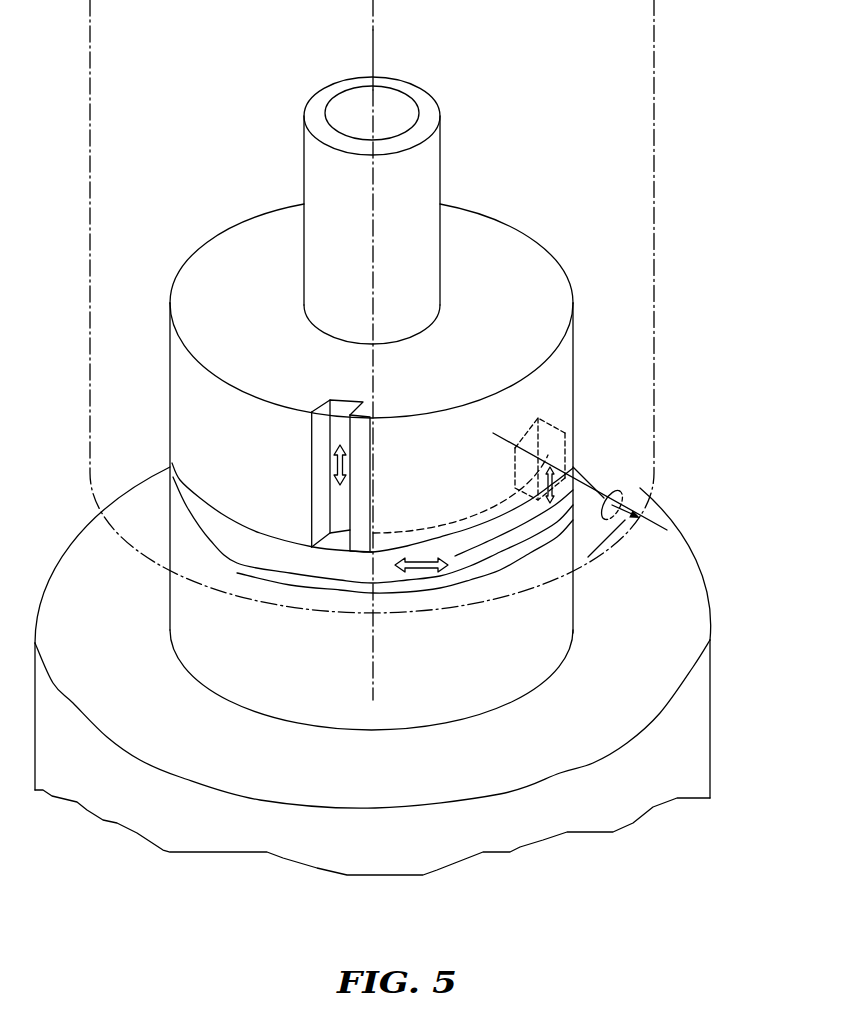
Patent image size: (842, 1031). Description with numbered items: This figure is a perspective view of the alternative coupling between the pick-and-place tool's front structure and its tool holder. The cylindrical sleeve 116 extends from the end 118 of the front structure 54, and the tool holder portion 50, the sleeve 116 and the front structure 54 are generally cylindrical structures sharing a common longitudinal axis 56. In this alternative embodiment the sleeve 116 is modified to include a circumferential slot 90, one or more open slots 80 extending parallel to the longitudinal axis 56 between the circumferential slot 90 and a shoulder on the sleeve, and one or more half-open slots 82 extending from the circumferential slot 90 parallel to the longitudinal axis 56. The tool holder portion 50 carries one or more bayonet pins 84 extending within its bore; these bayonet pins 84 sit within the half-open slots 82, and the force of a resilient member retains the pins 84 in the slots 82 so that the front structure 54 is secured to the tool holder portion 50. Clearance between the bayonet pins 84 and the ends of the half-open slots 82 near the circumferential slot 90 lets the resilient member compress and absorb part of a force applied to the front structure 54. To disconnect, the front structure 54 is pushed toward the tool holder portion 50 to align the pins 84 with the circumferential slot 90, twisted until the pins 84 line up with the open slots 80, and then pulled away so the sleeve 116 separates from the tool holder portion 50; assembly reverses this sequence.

The tool holder portion 50 is at (657, 32).
The front structure 54 is at (683, 660).
The longitudinal axis 56 is at (373, 40).
The open slot 80 is at (337, 400).
The half-open slot 82 is at (563, 443).
The bayonet pin 84 is at (613, 473).
The circumferential slot 90 is at (242, 536).
The cylindrical sleeve 116 is at (430, 170).
The end of front structure 118 is at (562, 297).